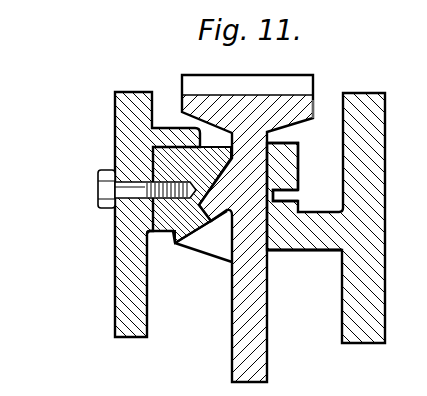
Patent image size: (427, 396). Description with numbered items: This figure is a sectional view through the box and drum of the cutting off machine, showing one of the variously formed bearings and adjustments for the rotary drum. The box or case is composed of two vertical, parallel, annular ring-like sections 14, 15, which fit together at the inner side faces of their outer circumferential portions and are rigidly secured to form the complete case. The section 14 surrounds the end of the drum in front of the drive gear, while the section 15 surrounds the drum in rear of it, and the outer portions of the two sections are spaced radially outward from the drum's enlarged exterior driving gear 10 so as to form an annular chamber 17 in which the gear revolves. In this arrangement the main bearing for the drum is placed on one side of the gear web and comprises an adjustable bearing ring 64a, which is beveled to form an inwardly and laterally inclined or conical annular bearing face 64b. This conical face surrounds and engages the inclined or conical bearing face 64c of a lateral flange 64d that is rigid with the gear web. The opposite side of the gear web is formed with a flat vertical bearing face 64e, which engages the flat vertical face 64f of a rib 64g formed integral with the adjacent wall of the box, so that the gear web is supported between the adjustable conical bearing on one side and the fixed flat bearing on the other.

The driving gear 10 is at (222, 110).
The case section 14 is at (118, 271).
The case section 15 is at (377, 306).
The annular chamber 17 is at (322, 122).
The adjustable bearing ring 64a is at (167, 172).
The conical annular bearing face 64b is at (298, 196).
The inclined bearing face 64c is at (170, 235).
The lateral flange 64d is at (203, 236).
The flat vertical bearing face 64e is at (275, 226).
The flat vertical face 64f is at (225, 177).
The rib 64g is at (320, 232).